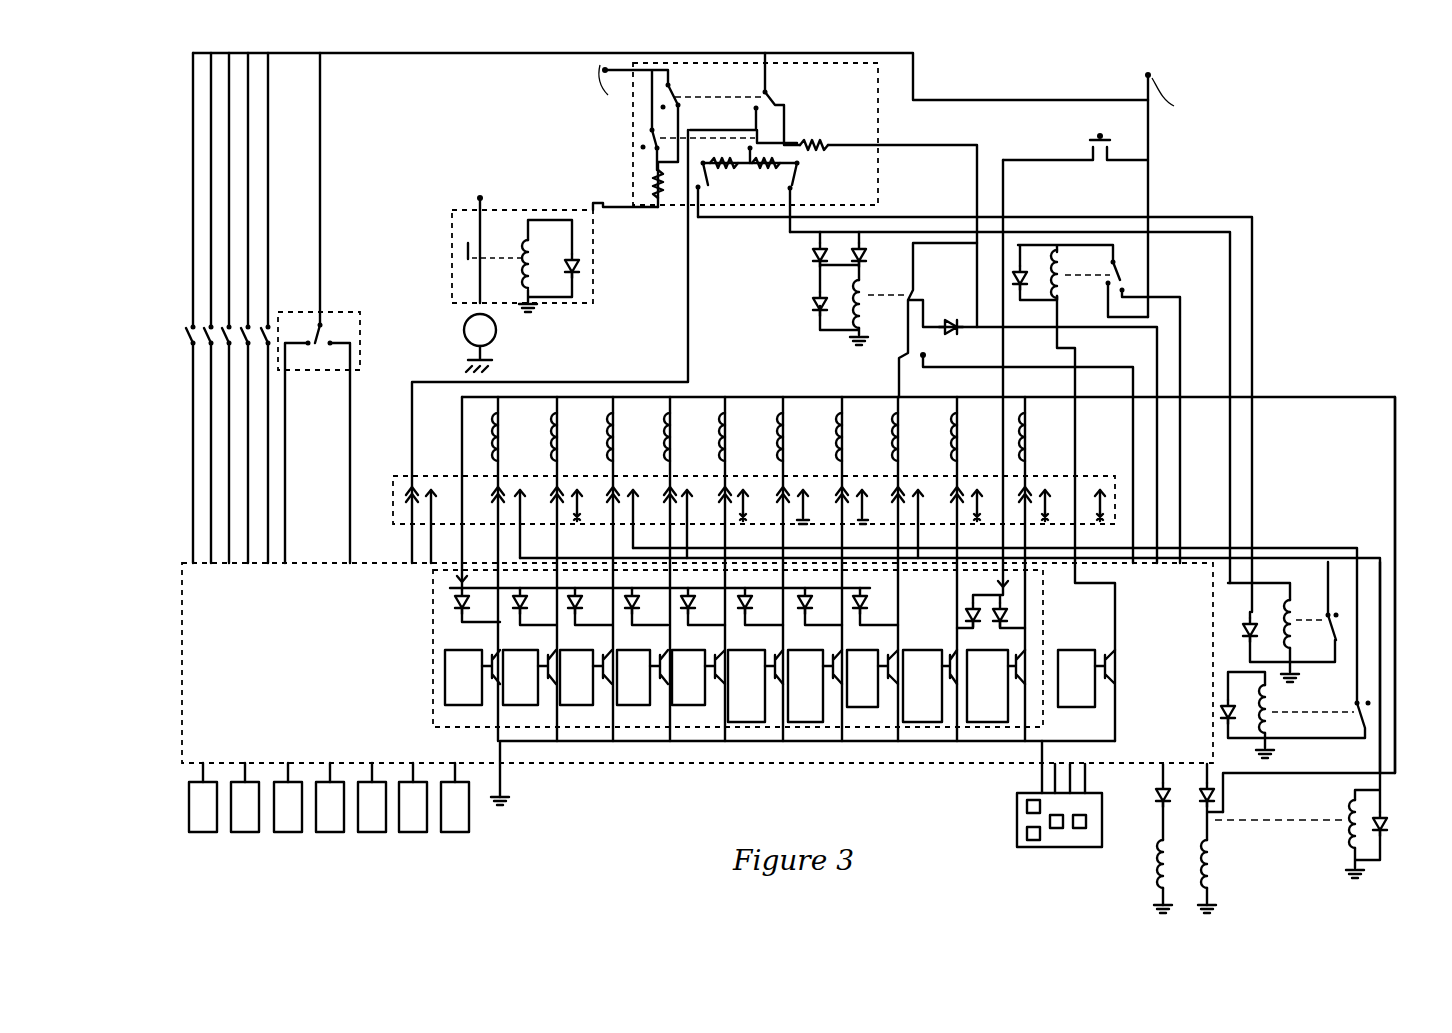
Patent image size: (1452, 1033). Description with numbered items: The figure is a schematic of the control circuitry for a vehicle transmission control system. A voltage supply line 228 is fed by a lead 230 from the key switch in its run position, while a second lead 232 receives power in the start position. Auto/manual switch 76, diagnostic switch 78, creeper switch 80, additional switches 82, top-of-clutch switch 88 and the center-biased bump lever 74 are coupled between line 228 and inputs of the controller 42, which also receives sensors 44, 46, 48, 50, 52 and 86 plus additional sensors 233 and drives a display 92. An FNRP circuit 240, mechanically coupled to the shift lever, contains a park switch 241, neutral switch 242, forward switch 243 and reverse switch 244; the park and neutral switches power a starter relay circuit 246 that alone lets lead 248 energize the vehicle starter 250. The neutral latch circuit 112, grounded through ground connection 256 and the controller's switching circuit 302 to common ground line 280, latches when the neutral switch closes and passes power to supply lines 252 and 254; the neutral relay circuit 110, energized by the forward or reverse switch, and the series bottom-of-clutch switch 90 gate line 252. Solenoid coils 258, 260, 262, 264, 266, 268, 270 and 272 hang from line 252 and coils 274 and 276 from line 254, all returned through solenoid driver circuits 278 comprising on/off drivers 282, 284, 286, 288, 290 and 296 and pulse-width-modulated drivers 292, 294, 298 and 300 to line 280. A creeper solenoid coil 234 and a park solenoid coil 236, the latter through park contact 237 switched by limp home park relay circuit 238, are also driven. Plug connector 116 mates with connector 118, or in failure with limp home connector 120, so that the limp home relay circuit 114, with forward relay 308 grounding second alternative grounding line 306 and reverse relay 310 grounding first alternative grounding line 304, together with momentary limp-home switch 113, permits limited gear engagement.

The voltage supply line 228 is at (410, 53).
The second lead 232 is at (609, 134).
The park switch 241 is at (695, 98).
The neutral switch 242 is at (698, 134).
The FNRP circuit 240 is at (864, 142).
The limp-home switch 113 is at (1118, 106).
The lead 230 is at (1203, 97).
The lead 248 is at (481, 196).
The starter relay circuit 246 is at (595, 270).
The vehicle starter 250 is at (497, 333).
The forward switch 243 is at (708, 188).
The reverse switch 244 is at (780, 184).
The neutral latch circuit 112 is at (1080, 243).
The top-of-clutch switch 88 is at (262, 331).
The additional switches 82 is at (246, 332).
The auto/manual switch 76 is at (190, 334).
The diagnostic switch 78 is at (207, 342).
The creeper switch 80 is at (226, 343).
The bump lever 74 is at (310, 360).
The neutral relay circuit 110 is at (820, 350).
The bottom-of-clutch switch 90 is at (904, 354).
The ground connection 256 is at (1083, 356).
The supply line 252 is at (702, 397).
The supply line 254 is at (1005, 397).
The solenoid coil 258 is at (516, 420).
The solenoid coil 260 is at (575, 420).
The solenoid coil 262 is at (631, 420).
The solenoid coil 264 is at (688, 420).
The solenoid coil 266 is at (743, 420).
The solenoid coil 268 is at (801, 420).
The solenoid coil 270 is at (860, 420).
The solenoid coil 272 is at (916, 420).
The solenoid coil 274 is at (975, 420).
The solenoid coil 276 is at (1043, 420).
The plug connector 116 is at (1120, 490).
The mating connector 118 is at (718, 494).
The limp home plug connector 120 is at (903, 631).
The first alternative grounding line 304 is at (1262, 544).
The second alternative grounding line 306 is at (1288, 563).
The forward limp home relay circuit 308 is at (1313, 597).
The limp home relay circuit 114 is at (1366, 638).
The solenoid driver circuits 278 is at (433, 633).
The controller 42 is at (193, 712).
The switching circuit 302 is at (1097, 695).
The reverse limp home relay circuit 310 is at (1313, 690).
The sensor 44 is at (205, 832).
The sensor 46 is at (255, 832).
The sensor 48 is at (298, 832).
The sensor 50 is at (330, 832).
The sensor 52 is at (380, 832).
The sensor 86 is at (425, 832).
The additional sensors 233 is at (455, 832).
The on/off-type driver 282 is at (468, 707).
The on/off-type driver 284 is at (525, 707).
The on/off-type driver 286 is at (590, 707).
The on/off-type driver 288 is at (645, 707).
The on/off-type driver 290 is at (700, 707).
The pulse-width-modulated driver 292 is at (760, 724).
The pulse-width-modulated driver 294 is at (818, 724).
The on/off-type driver 296 is at (873, 709).
The pulse-width-modulated driver 298 is at (930, 724).
The pulse-width-modulated driver 300 is at (978, 724).
The common ground line 280 is at (1005, 730).
The display 92 is at (1105, 800).
The creeper solenoid coil 234 is at (1162, 864).
The park contact 237 is at (1215, 822).
The park solenoid coil 236 is at (1218, 862).
The limp home park relay circuit 238 is at (1368, 868).